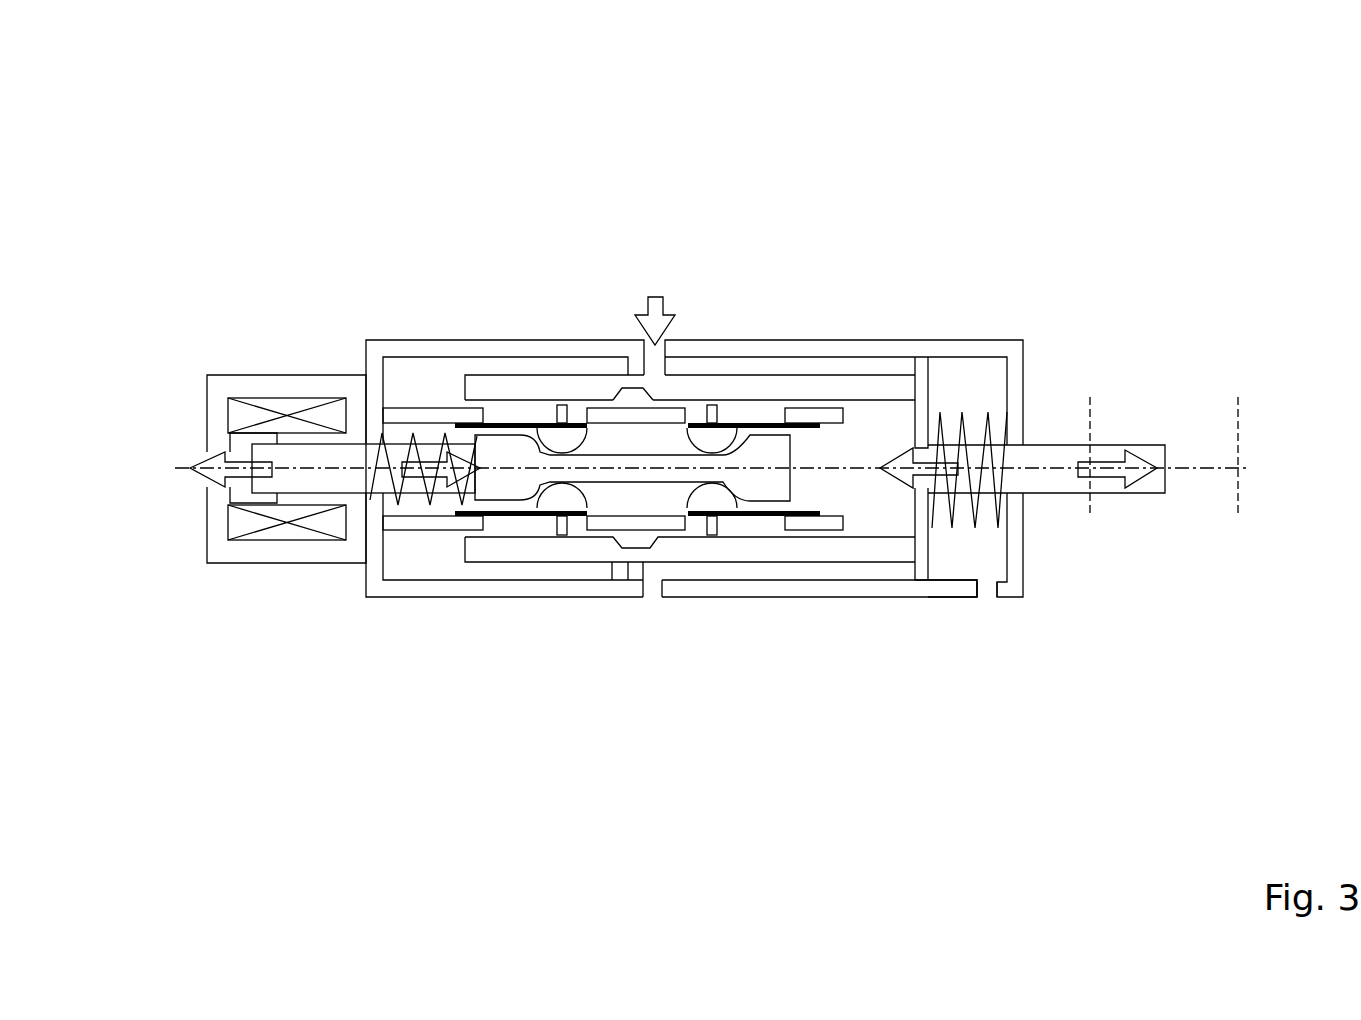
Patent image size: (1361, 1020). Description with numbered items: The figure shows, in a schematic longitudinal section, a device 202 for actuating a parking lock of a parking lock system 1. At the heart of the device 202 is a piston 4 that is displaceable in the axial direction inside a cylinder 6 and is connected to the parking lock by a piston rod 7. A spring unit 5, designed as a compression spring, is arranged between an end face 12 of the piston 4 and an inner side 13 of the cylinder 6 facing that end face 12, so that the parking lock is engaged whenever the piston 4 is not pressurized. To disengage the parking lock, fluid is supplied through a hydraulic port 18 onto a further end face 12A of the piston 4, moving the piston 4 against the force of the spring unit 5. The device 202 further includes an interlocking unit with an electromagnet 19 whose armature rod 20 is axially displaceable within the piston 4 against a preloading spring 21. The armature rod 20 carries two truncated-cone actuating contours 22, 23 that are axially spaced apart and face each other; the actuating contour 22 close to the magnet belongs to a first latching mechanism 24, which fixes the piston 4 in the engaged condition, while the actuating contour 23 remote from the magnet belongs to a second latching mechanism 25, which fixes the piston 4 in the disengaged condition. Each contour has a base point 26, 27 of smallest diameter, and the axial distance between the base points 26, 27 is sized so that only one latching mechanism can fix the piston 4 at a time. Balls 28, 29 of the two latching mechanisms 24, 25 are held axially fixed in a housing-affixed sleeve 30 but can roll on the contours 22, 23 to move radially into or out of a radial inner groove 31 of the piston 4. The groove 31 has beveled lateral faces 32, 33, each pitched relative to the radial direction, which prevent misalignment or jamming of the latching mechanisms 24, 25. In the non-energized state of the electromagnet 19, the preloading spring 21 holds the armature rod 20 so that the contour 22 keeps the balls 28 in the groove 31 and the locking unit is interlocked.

The parking lock system 1 is at (358, 228).
The piston 4 is at (813, 387).
The spring unit 5 is at (960, 448).
The cylinder 6 is at (950, 588).
The piston rod 7 is at (1050, 462).
The end face 12 is at (928, 400).
The further end face 12A is at (913, 367).
The inner side 13 is at (988, 555).
The hydraulic port 18 is at (640, 348).
The electromagnet 19 is at (250, 385).
The armature rod 20 is at (310, 457).
The preloading spring 21 is at (363, 457).
The actuating contour close to the magnet 22 is at (478, 500).
The actuating contour remote from the magnet 23 is at (734, 492).
The first latching mechanism 24 is at (545, 537).
The second latching mechanism 25 is at (717, 542).
The base point 26 is at (556, 490).
The base point 27 is at (740, 530).
The balls 28 is at (590, 525).
The balls 29 is at (712, 500).
The sleeve 30 is at (437, 518).
The radial inner groove 31 is at (630, 383).
The lateral face 32 is at (613, 392).
The lateral face 33 is at (660, 393).
The device 202 is at (973, 287).